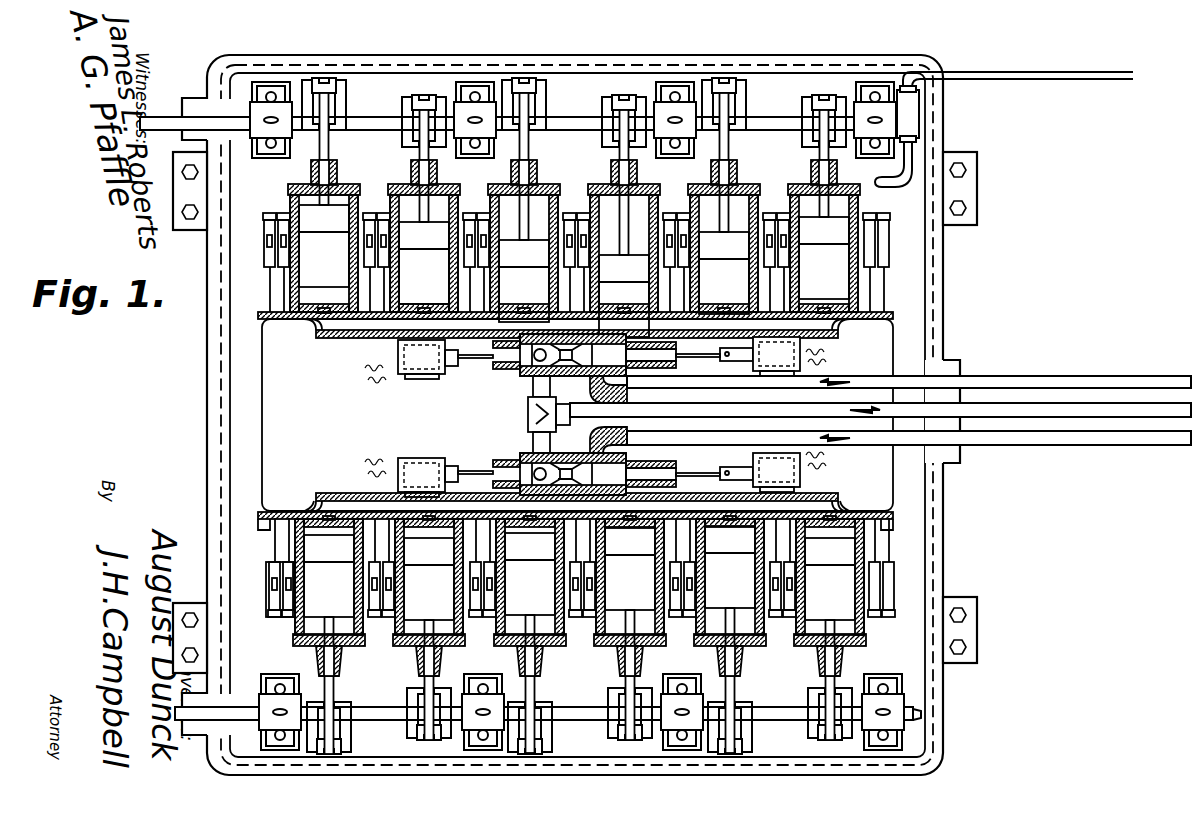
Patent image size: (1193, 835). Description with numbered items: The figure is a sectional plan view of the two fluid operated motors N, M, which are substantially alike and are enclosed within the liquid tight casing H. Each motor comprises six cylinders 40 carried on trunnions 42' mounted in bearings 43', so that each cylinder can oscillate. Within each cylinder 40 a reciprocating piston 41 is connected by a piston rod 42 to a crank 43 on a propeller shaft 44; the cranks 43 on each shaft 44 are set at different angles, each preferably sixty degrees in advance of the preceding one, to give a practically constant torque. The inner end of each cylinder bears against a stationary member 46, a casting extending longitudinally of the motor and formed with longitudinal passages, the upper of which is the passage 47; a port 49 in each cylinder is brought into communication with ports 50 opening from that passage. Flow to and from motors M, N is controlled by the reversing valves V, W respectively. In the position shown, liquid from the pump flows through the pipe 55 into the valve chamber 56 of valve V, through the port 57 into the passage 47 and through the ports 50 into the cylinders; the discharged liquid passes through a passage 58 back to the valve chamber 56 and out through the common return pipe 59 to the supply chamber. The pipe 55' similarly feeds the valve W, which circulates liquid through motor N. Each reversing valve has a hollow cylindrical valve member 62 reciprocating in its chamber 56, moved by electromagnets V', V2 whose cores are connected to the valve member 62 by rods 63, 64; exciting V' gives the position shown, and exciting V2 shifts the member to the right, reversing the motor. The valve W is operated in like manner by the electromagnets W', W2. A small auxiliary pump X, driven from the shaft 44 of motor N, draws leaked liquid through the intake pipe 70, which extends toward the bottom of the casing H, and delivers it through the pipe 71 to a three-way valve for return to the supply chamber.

The casing H is at (210, 430).
The motor N is at (900, 270).
The motor M is at (950, 545).
The auxiliary pump X is at (920, 128).
The cylinder 40 is at (579, 418).
The piston 41 is at (577, 412).
The piston rod 42 is at (577, 423).
The trunnion 42' is at (330, 658).
The crank 43 is at (577, 416).
The bearing 43' is at (262, 589).
The propeller shaft 44 is at (150, 118).
The stationary member 46 is at (300, 320).
The longitudinal passage 47 is at (336, 330).
The port 49 is at (262, 526).
The port 50 is at (312, 498).
The pipe 55 is at (909, 455).
The pipe 55' is at (909, 360).
The valve chamber 56 is at (556, 376).
The port 57 is at (580, 480).
The passage 58 is at (684, 486).
The common return pipe 59 is at (1092, 418).
The valve member 62 is at (630, 488).
The rod 63 is at (470, 474).
The rod 64 is at (705, 470).
The intake pipe 70 is at (903, 182).
The pipe 71 is at (1090, 80).
The reversing valve W is at (615, 368).
The electromagnet W' is at (412, 361).
The electromagnet W2 is at (825, 352).
The reversing valve V is at (607, 461).
The electromagnet V' is at (412, 465).
The electromagnet V2 is at (828, 470).